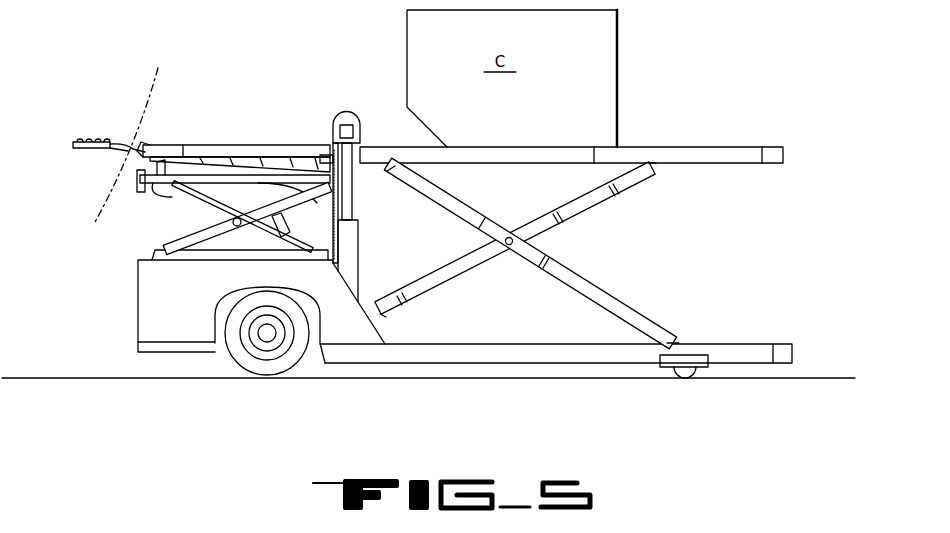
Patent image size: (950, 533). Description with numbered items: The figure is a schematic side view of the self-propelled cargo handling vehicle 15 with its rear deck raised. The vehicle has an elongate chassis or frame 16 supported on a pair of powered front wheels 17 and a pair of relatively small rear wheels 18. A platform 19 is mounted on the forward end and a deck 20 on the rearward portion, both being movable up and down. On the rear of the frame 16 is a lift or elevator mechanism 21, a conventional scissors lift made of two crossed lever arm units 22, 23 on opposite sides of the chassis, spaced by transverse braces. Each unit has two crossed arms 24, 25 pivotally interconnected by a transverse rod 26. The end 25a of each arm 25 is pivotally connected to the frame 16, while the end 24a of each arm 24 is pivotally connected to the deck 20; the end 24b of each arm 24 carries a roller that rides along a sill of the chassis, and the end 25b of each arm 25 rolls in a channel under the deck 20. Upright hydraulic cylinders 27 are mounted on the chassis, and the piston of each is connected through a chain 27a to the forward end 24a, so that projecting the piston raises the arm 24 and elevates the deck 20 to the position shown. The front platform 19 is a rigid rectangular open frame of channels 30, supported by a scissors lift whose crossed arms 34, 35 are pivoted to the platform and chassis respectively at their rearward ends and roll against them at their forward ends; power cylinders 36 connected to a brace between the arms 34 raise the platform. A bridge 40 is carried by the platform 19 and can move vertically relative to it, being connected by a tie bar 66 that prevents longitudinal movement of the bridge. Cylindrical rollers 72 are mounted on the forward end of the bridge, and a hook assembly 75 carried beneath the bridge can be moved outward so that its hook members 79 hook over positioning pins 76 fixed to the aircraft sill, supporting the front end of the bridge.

The self-propelled cargo handling vehicle 15 is at (133, 293).
The chassis or frame 16 is at (765, 346).
The powered front wheels 17 is at (264, 375).
The rear wheels 18 is at (690, 378).
The platform 19 is at (176, 191).
The deck 20 is at (674, 147).
The lift or elevator mechanism 21 is at (549, 253).
The crossed lever arm unit 22 is at (448, 196).
The crossed lever arm unit 23 is at (532, 210).
The lever arm 24 is at (530, 253).
The end of lever arm 24 24a is at (380, 167).
The end of lever arm 24 24b is at (676, 342).
The lever arm 25 is at (515, 238).
The end of lever arm 25 25a is at (382, 317).
The end of lever arm 25 25b is at (655, 170).
The transverse rod 26 is at (509, 245).
The hydraulic cylinder 27 is at (360, 236).
The chain 27a is at (362, 151).
The channels 30 is at (140, 181).
The arm 34 is at (175, 248).
The arm 35 is at (192, 212).
The power cylinder 36 is at (283, 236).
The bridge 40 is at (186, 135).
The tie bar 66 is at (194, 157).
The cylindrical rollers 72 is at (150, 145).
The hook assembly 75 is at (105, 152).
The positioning pins 76 is at (150, 162).
The hook member 79 is at (130, 146).